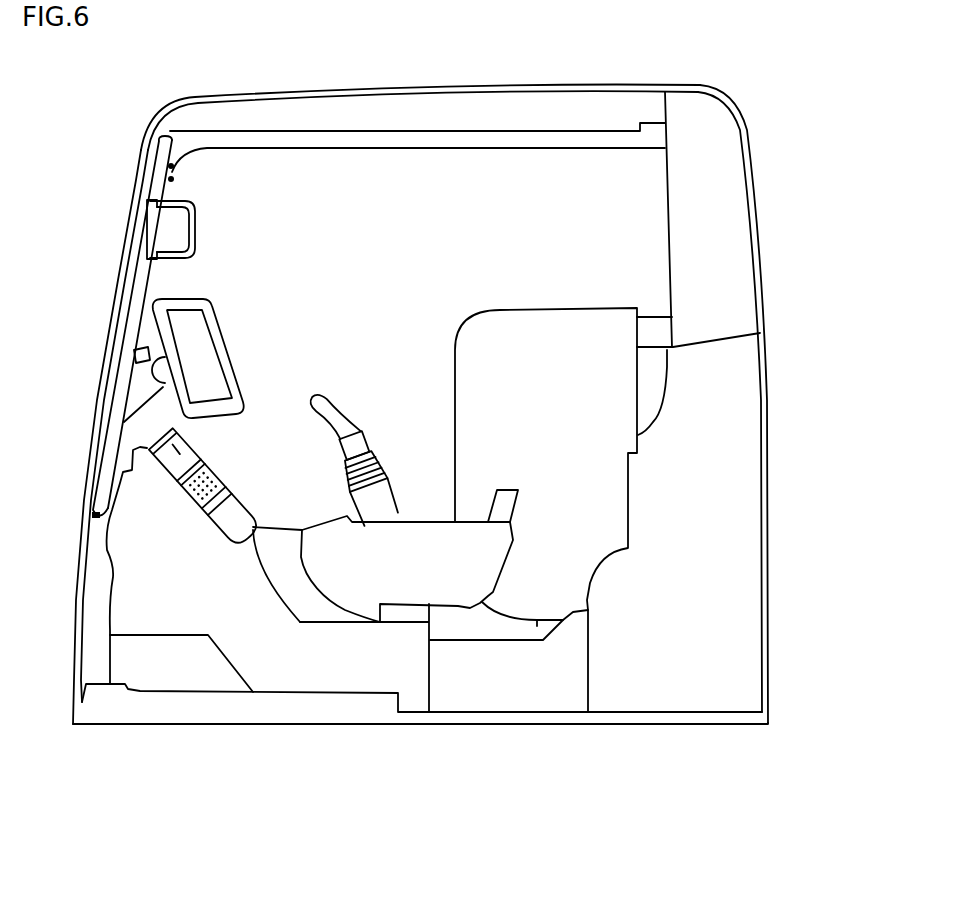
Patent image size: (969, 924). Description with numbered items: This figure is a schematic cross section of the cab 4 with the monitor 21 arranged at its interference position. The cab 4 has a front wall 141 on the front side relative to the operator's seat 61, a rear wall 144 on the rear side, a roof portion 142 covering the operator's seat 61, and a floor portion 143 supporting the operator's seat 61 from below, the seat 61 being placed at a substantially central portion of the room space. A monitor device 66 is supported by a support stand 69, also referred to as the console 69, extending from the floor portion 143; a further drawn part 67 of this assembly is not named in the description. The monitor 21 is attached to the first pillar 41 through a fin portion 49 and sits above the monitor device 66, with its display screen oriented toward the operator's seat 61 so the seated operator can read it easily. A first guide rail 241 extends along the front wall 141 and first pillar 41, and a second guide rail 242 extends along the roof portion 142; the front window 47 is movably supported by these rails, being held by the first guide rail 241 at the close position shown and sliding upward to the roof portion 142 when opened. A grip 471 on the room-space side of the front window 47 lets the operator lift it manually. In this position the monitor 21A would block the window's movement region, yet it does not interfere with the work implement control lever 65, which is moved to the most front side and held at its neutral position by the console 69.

The cab 4 is at (750, 77).
The roof portion 142 is at (428, 84).
The second guide rail 242 is at (505, 141).
The front window 47 is at (153, 222).
The grip 471 is at (193, 234).
The first pillar 41 is at (153, 267).
The front wall 141 is at (103, 325).
The fin portion 49 is at (150, 382).
The first guide rail 241 is at (128, 410).
The monitor 21 is at (198, 348).
The monitor at the interference position 21A is at (199, 356).
The monitor device 66 is at (158, 443).
The keypad 67 is at (187, 496).
The work implement control lever 65 is at (332, 410).
The rear wall 144 is at (768, 320).
The support stand 69 is at (260, 637).
The floor portion 143 is at (355, 725).
The operator's seat 61 is at (438, 563).